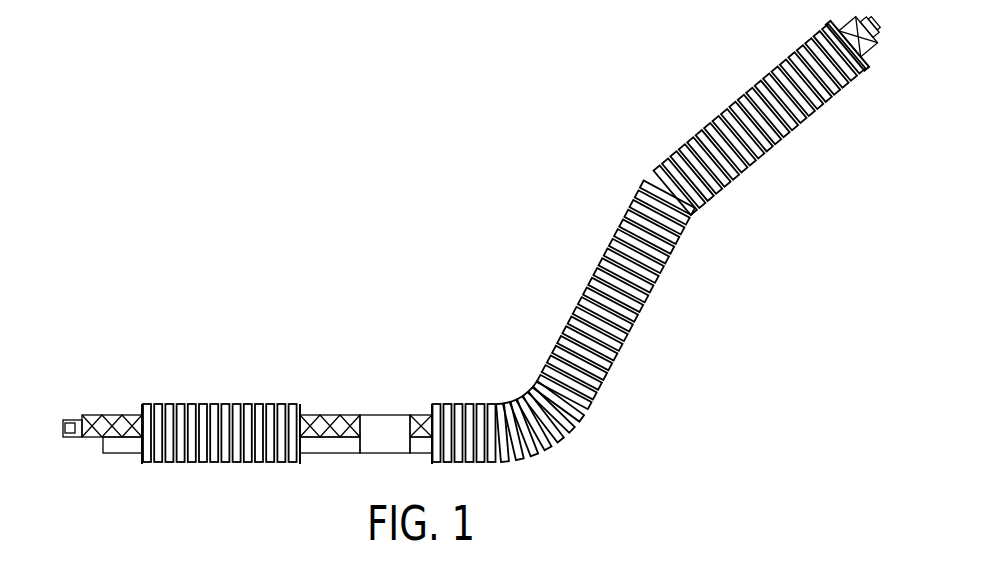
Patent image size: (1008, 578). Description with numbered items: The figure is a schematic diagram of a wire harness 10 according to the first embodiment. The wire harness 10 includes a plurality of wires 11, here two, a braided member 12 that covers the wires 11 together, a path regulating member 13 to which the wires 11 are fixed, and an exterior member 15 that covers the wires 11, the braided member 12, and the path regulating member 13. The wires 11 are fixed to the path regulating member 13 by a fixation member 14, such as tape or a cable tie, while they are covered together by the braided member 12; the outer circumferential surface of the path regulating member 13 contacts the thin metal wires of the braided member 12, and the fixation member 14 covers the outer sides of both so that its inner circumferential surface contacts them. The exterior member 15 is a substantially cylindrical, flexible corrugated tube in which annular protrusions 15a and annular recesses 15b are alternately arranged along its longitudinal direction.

The wire harness 10 is at (329, 163).
The wires 11 is at (77, 421).
The braided member 12 is at (132, 418).
The path regulating member 13 is at (118, 450).
The fixation member 14 is at (385, 420).
The exterior member 15 is at (240, 405).
The annular protrusions 15a is at (637, 198).
The annular recesses 15b is at (657, 175).